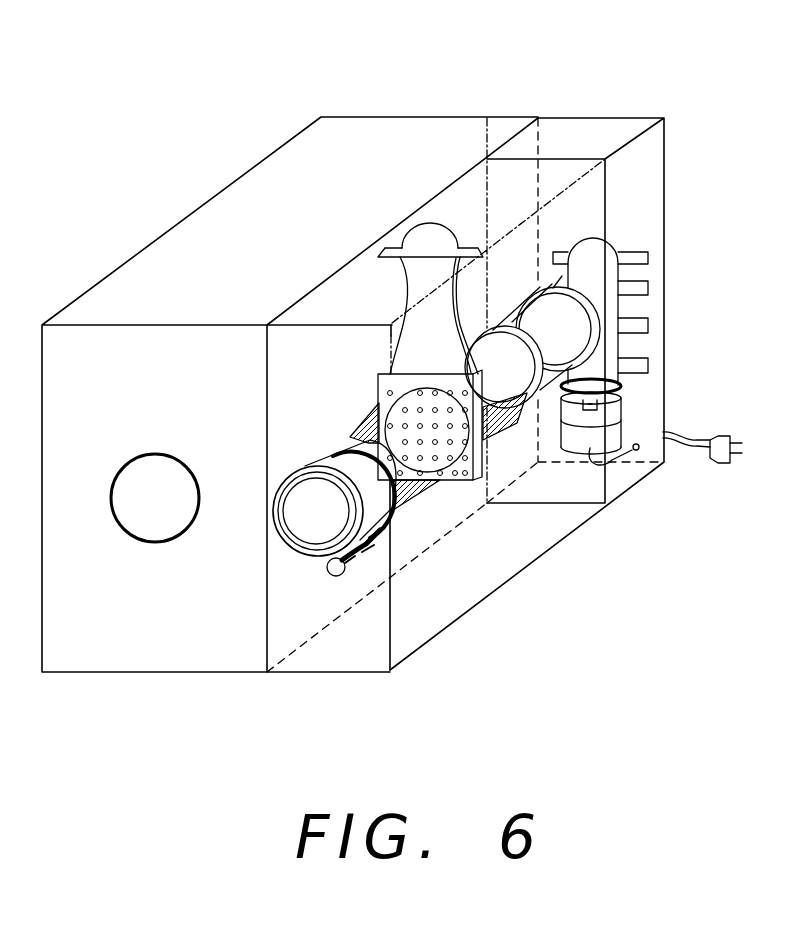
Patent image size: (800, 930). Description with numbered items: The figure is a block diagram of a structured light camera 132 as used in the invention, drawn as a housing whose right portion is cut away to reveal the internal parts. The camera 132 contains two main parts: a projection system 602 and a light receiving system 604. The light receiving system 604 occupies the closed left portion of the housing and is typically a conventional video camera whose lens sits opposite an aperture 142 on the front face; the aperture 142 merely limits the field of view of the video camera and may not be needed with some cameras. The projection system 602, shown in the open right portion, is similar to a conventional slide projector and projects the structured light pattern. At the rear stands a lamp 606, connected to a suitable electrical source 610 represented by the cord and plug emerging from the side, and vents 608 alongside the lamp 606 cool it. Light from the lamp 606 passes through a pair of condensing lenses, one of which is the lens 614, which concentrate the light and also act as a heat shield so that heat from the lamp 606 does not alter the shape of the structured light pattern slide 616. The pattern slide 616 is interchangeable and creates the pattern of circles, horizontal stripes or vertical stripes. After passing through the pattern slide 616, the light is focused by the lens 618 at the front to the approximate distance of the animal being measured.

The structured light camera 132 is at (500, 82).
The aperture 142 is at (176, 509).
The projection system 602 is at (588, 117).
The light receiving system 604 is at (236, 179).
The lamp 606 is at (623, 310).
The vents 608 is at (648, 258).
The electrical source 610 is at (692, 433).
The lens 614 is at (507, 370).
The structured light pattern slide 616 is at (480, 473).
The lens 618 is at (345, 518).